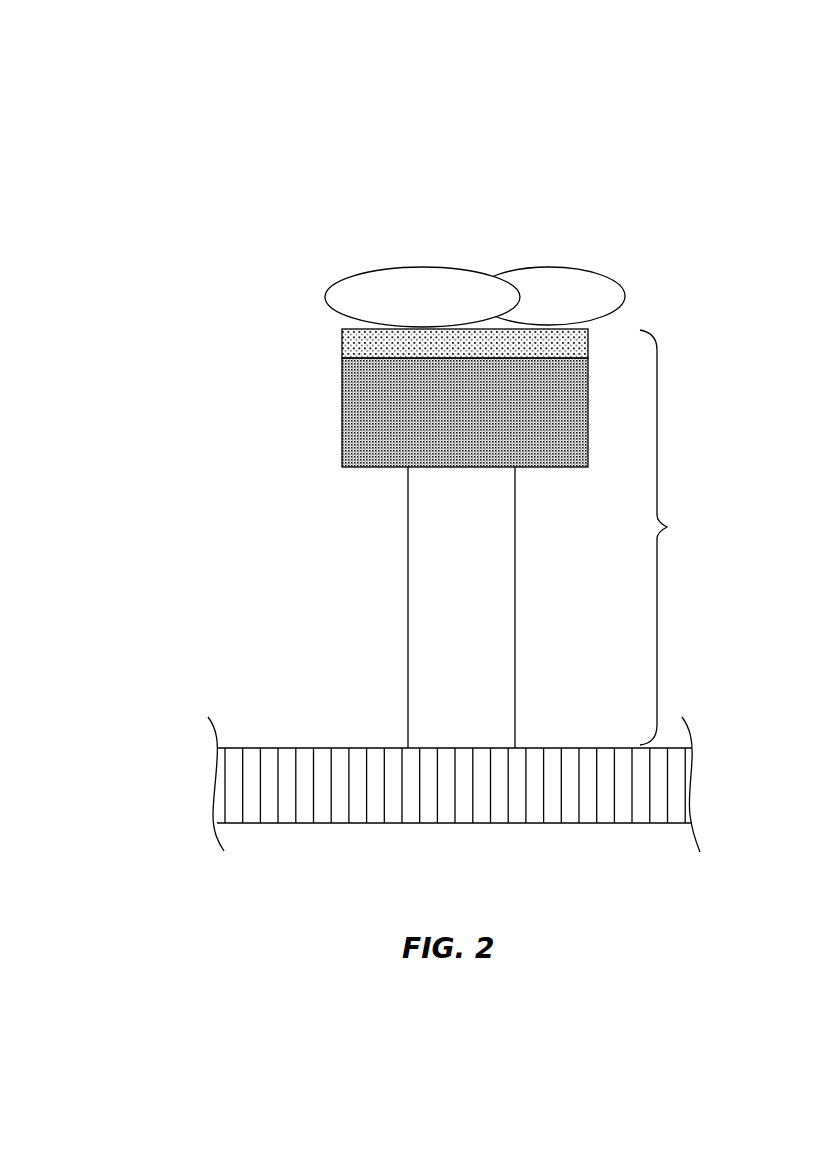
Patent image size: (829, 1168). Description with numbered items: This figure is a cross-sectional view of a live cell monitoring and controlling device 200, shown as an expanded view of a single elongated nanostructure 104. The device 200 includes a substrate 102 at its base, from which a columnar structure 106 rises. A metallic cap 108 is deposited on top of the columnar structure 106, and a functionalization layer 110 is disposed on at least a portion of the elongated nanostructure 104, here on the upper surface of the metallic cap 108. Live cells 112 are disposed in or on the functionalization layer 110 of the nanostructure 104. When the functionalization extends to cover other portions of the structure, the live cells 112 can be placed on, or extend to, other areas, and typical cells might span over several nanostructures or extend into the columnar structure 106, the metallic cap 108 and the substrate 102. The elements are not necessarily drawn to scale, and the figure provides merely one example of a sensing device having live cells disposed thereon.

The monitoring and controlling device 200 is at (56, 40).
The substrate 102 is at (303, 768).
The elongated nanostructure 104 is at (680, 537).
The columnar structure 106 is at (437, 647).
The metallic cap 108 is at (377, 417).
The functionalization layer 110 is at (377, 345).
The live cells 112 is at (430, 295).